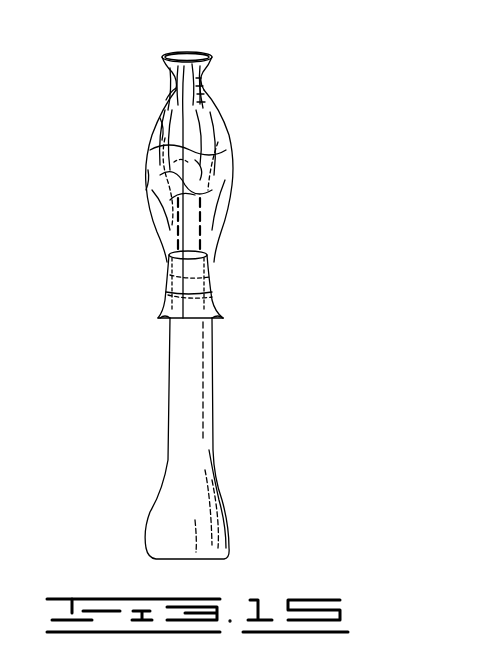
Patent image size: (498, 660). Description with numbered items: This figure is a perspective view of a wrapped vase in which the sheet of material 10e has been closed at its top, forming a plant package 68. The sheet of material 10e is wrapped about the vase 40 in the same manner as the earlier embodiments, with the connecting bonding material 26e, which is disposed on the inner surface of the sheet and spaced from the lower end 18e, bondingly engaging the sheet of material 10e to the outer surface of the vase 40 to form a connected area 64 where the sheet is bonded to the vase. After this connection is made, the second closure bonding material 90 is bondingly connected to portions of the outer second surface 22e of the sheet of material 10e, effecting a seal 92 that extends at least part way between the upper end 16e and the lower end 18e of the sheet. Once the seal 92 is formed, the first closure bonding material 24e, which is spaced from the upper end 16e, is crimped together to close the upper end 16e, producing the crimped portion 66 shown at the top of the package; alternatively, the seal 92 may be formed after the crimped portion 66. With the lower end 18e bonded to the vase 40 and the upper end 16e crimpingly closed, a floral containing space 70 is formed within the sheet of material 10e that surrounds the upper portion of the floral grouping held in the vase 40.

The sheet of material 10e is at (246, 131).
The upper end 16e is at (209, 55).
The lower end 18e is at (213, 319).
The outer second surface 22e is at (213, 190).
The first closure bonding material 24e is at (171, 97).
The connecting bonding material 26e is at (210, 293).
The vase 40 is at (150, 407).
The connected area 64 is at (195, 279).
The crimped portion 66 is at (207, 99).
The plant package 68 is at (118, 203).
The floral containing space 70 is at (208, 164).
The second closure bonding material 90 is at (172, 160).
The seal 92 is at (158, 130).